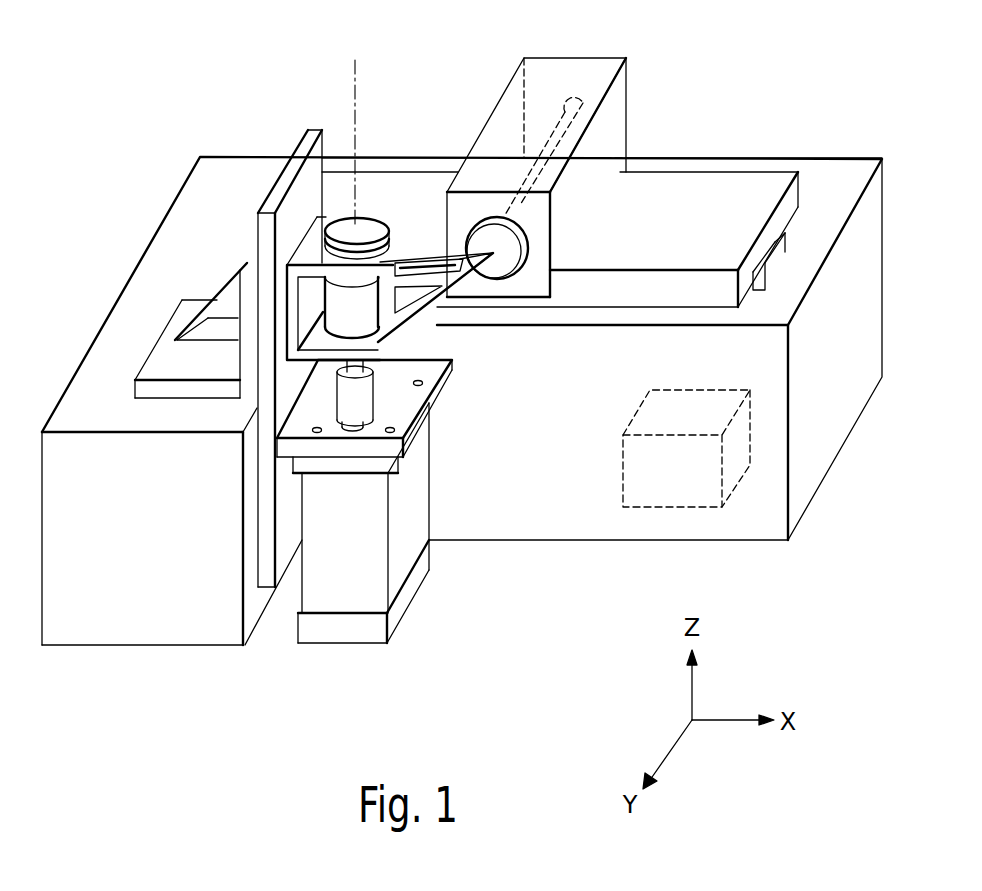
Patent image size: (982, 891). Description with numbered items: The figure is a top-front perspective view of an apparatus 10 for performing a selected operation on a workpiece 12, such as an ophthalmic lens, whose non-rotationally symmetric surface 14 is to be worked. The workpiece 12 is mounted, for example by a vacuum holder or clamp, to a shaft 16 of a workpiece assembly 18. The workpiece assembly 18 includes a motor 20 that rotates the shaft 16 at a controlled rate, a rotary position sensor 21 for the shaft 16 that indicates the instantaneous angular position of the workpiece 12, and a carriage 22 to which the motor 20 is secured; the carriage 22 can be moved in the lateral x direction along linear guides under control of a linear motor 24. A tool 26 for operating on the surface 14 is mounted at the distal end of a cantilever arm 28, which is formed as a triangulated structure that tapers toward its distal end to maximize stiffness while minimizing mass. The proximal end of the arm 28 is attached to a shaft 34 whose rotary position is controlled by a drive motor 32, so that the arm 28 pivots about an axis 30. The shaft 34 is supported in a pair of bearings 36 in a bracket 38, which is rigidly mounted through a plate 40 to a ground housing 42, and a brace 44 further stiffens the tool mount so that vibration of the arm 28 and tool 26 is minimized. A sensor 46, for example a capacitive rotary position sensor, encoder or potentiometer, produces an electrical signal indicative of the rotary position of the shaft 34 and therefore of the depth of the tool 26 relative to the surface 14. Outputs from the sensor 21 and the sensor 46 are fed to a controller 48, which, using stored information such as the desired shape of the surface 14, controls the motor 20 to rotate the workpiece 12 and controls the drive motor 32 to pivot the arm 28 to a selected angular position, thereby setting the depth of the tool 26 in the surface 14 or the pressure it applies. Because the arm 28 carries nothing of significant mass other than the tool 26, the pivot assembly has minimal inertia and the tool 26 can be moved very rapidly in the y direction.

The apparatus 10 is at (462, 378).
The workpiece 12 is at (528, 240).
The surface 14 is at (483, 247).
The shaft 16 is at (553, 137).
The workpiece assembly 18 is at (585, 150).
The motor 20 is at (578, 193).
The rotary position sensor 21 is at (560, 65).
The carriage 22 is at (745, 172).
The linear motor 24 is at (775, 262).
The tool 26 is at (495, 260).
The cantilever arm 28 is at (428, 308).
The axis 30 is at (355, 80).
The drive motor 32 is at (362, 397).
The shaft 34 is at (345, 370).
The bearings 36 is at (370, 333).
The bracket 38 is at (313, 250).
The plate 40 is at (310, 142).
The ground housing 42 is at (202, 612).
The brace 44 is at (188, 323).
The sensor 46 is at (370, 226).
The controller 48 is at (687, 418).